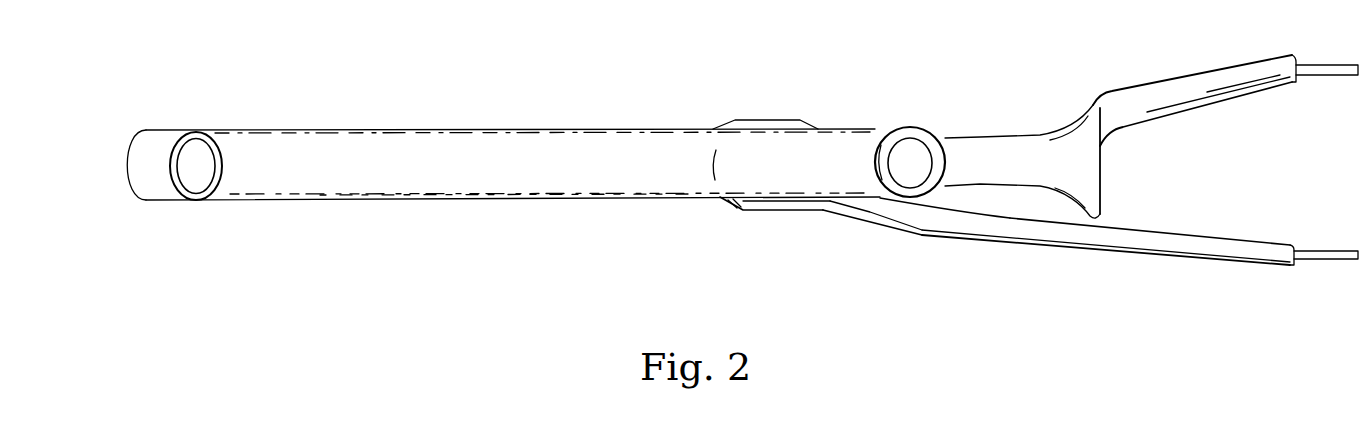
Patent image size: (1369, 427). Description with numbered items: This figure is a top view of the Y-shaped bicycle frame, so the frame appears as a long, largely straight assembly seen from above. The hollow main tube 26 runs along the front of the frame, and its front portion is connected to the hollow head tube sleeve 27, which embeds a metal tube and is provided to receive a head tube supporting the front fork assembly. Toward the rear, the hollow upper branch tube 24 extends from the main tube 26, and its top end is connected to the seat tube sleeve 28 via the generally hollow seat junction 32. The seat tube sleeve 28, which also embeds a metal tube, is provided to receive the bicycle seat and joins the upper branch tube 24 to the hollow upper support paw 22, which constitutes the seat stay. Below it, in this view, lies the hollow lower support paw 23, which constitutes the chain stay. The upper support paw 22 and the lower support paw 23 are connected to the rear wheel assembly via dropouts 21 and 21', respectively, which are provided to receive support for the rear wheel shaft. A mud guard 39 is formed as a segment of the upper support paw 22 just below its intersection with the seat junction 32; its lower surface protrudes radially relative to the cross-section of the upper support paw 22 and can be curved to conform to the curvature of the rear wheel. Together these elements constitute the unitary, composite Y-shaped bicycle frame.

The dropout 21 is at (1327, 99).
The dropout 21' is at (1326, 289).
The upper support paw 22 is at (1180, 78).
The lower support paw 23 is at (1153, 256).
The upper branch tube 24 is at (757, 194).
The main tube 26 is at (567, 198).
The head tube sleeve 27 is at (210, 140).
The seat tube sleeve 28 is at (923, 128).
The seat junction 32 is at (868, 183).
The mud guard 39 is at (1078, 113).